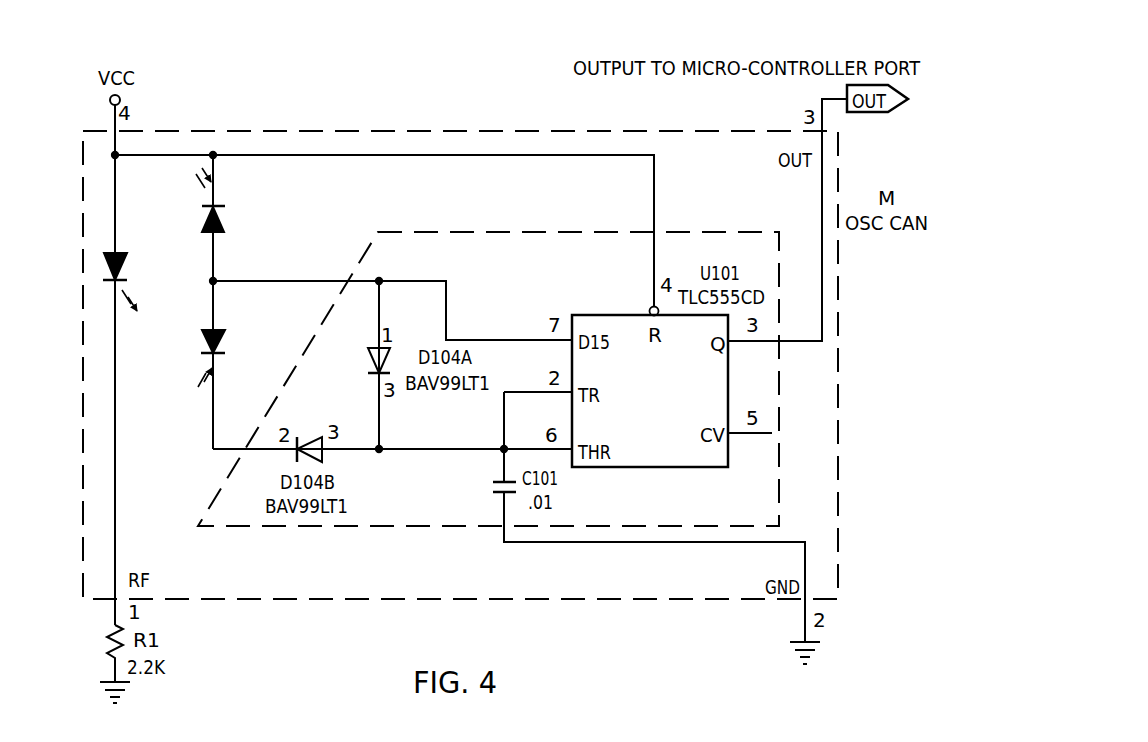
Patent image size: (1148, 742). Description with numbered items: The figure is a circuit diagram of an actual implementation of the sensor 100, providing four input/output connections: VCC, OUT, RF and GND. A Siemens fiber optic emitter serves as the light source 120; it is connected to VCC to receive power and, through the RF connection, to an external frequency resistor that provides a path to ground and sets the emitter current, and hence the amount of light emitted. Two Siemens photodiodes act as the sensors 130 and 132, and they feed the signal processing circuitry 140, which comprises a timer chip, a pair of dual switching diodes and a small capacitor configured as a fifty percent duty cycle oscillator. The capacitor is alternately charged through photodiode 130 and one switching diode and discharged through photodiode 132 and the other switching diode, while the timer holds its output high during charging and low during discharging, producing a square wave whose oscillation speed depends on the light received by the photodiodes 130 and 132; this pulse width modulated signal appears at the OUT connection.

The sensor circuit 100 is at (460, 299).
The light source 120 is at (118, 255).
The photodiode 130 is at (206, 219).
The photodiode 132 is at (223, 343).
The signal processing circuitry 140 is at (457, 519).